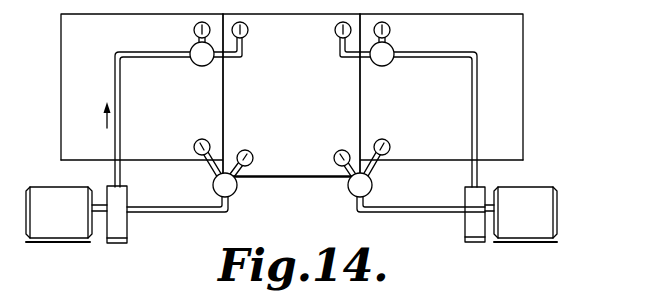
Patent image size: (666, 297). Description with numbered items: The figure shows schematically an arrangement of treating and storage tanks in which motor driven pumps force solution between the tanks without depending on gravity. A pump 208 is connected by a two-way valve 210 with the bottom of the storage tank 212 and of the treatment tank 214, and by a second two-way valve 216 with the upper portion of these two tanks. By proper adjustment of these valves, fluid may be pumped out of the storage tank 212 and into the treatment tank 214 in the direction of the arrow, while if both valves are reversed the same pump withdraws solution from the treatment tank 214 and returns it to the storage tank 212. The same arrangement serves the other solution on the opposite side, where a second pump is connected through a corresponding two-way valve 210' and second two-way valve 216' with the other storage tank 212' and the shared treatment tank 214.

The pump 208 is at (123, 229).
The two-way valve 210 is at (239, 170).
The two-way valve 210' is at (378, 170).
The storage tank 212 is at (142, 95).
The storage tank 212' is at (441, 95).
The treatment tank 214 is at (318, 134).
The two-way valve 216 is at (203, 56).
The two-way valve 216' is at (384, 54).